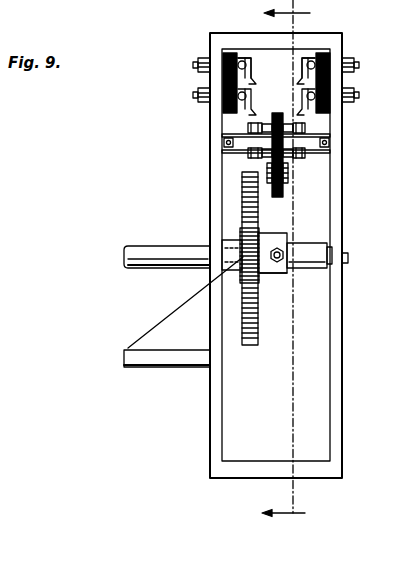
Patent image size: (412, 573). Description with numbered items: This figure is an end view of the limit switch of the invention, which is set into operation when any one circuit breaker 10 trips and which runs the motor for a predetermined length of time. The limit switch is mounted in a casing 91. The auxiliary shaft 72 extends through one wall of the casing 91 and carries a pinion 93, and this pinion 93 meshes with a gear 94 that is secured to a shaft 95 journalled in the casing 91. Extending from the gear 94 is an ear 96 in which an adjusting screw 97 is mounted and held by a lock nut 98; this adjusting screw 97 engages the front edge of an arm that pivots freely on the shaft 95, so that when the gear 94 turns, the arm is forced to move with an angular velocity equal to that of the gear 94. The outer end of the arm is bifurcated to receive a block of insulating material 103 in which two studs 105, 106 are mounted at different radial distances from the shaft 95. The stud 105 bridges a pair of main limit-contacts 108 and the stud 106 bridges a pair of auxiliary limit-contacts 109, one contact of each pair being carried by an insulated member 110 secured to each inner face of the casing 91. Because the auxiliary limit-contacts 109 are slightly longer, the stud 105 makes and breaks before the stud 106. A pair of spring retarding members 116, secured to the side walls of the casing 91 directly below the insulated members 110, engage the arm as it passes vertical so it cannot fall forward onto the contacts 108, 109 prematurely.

The circuit breaker 10 is at (296, 261).
The auxiliary shaft 72 is at (168, 250).
The casing 91 is at (213, 435).
The pinion 93 is at (248, 257).
The gear 94 is at (245, 309).
The shaft 95 is at (348, 258).
The ear 96 is at (282, 240).
The adjusting screw 97 is at (276, 264).
The lock nut 98 is at (272, 275).
The block of insulating material 103 is at (287, 182).
The stud 105 is at (305, 128).
The stud 106 is at (305, 155).
The main limit-contacts 108 is at (253, 80).
The auxiliary limit-contacts 109 is at (303, 105).
The insulated member 110 is at (222, 95).
The retarding members 116 is at (225, 153).